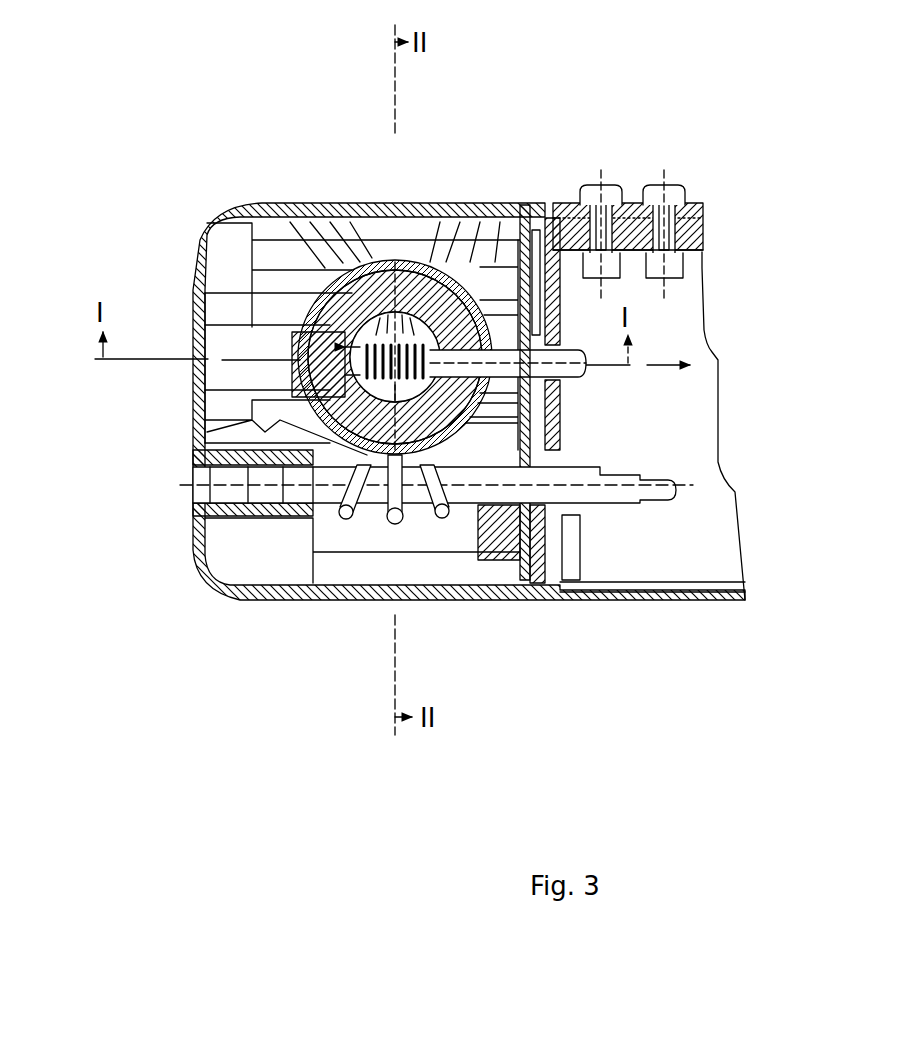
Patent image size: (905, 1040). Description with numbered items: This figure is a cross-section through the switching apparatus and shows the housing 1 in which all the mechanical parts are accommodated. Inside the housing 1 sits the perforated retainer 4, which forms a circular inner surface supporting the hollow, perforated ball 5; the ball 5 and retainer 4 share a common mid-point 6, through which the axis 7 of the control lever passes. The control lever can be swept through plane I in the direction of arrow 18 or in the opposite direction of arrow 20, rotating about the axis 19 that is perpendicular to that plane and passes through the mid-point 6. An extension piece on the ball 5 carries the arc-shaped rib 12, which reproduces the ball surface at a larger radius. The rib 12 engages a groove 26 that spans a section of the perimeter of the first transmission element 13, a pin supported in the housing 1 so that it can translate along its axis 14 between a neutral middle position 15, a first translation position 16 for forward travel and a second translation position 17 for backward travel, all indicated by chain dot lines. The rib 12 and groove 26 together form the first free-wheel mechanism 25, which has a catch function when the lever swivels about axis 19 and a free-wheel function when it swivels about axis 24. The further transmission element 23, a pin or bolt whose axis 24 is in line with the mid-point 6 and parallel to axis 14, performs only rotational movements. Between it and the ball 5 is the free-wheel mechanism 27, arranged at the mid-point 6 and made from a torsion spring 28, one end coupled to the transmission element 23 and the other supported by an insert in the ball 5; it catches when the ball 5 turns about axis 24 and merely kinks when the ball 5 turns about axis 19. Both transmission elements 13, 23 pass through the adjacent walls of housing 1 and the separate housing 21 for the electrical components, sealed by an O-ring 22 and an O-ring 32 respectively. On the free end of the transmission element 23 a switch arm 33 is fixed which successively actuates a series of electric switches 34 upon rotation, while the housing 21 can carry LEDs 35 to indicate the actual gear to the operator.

The housing 1 is at (215, 210).
The retainer 4 is at (290, 232).
The ball 5 is at (318, 248).
The mid-point 6 is at (412, 262).
The axis 7 is at (420, 250).
The arc-shaped rib 12 is at (395, 527).
The first transmission element 13 is at (490, 527).
The axis 14 is at (524, 530).
The neutral middle position 15 is at (628, 472).
The first translation position 16 is at (662, 477).
The second translation position 17 is at (593, 466).
The arrow 18 is at (267, 360).
The axis 19 is at (395, 177).
The arrow 20 is at (663, 363).
The housing 21 is at (637, 597).
The O-ring 22 is at (562, 550).
The further transmission element 23 is at (468, 270).
The axis 24 is at (500, 225).
The first free-wheel mechanism 25 is at (355, 538).
The groove 26 is at (376, 490).
The free-wheel mechanism 27 is at (345, 262).
The torsion spring 28 is at (438, 262).
The O-ring 32 is at (547, 220).
The switch arm 33 is at (678, 198).
The electric switches 34 is at (577, 187).
The LEDs 35 is at (613, 183).